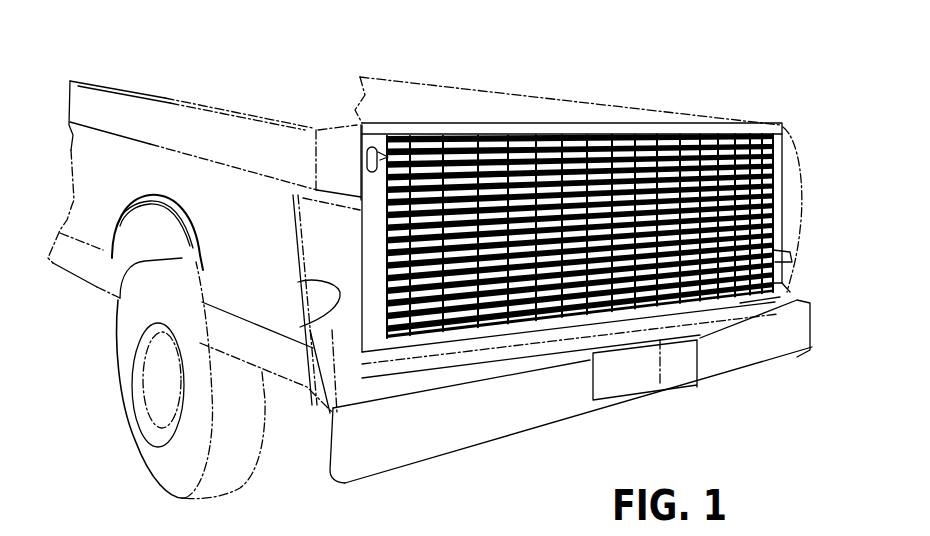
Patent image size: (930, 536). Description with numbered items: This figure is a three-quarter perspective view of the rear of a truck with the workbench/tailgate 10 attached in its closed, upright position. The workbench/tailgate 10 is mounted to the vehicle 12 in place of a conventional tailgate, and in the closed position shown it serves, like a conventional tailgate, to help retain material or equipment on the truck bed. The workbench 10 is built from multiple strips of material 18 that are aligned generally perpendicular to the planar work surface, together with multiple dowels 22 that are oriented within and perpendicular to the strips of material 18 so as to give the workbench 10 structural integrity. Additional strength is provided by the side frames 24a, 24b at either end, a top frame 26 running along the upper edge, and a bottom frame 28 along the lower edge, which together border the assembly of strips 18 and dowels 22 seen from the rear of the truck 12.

The workbench/tailgate 10 is at (719, 92).
The vehicle 12 is at (222, 138).
The strips of material 18 is at (783, 170).
The dowels 22 is at (486, 314).
The side frame 24a is at (298, 283).
The side frame 24b is at (777, 256).
The top frame 26 is at (673, 134).
The bottom frame 28 is at (752, 297).